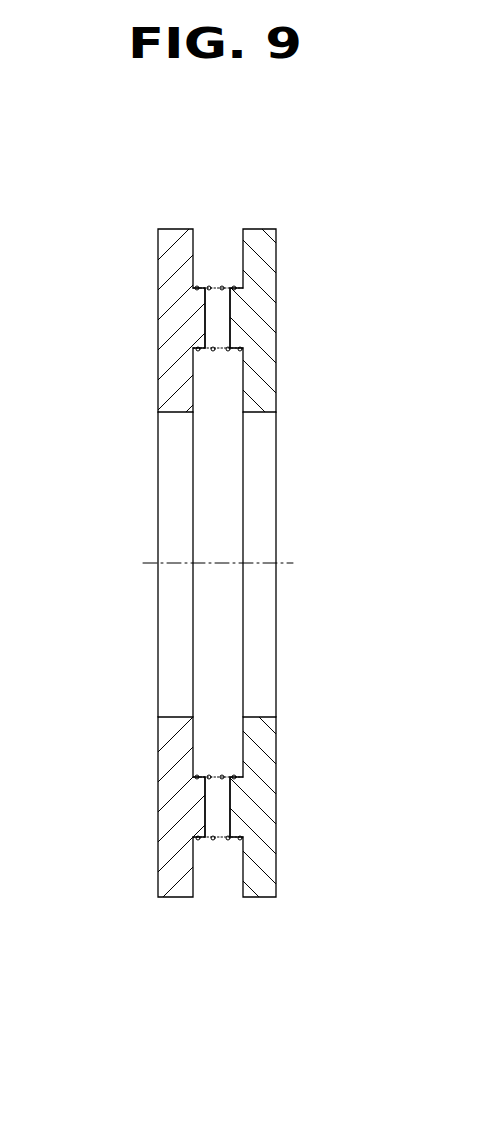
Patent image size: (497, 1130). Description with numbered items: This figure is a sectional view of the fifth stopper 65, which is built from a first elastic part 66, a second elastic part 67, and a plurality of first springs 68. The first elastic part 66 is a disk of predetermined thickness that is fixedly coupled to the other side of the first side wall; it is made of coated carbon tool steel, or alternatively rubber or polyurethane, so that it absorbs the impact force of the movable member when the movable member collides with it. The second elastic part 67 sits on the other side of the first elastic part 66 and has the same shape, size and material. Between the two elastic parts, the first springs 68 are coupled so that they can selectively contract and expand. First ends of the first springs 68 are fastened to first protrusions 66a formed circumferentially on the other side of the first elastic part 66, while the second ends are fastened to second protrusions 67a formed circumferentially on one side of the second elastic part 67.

The fifth stopper 65 is at (279, 862).
The first elastic part 66 is at (182, 258).
The first protrusions 66a is at (205, 315).
The second elastic part 67 is at (265, 368).
The second protrusions 67a is at (230, 320).
The first springs 68 is at (243, 290).